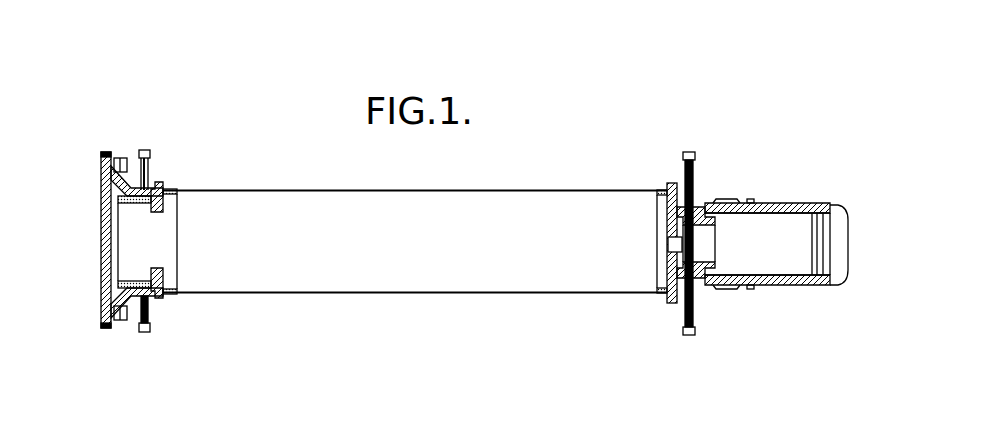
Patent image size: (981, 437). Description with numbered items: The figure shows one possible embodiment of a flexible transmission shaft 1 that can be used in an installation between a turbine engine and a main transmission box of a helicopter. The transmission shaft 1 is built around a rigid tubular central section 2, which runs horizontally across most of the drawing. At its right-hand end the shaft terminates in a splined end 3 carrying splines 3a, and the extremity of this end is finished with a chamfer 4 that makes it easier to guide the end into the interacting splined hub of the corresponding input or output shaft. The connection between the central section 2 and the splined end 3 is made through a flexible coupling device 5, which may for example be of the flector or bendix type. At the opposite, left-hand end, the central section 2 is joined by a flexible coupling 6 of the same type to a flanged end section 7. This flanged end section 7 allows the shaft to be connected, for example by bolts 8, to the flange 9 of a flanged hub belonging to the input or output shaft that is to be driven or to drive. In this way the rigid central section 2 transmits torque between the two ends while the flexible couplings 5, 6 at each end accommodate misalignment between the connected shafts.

The transmission shaft 1 is at (462, 300).
The rigid tubular central section 2 is at (272, 210).
The splined end 3 is at (756, 234).
The splines 3a is at (787, 290).
The chamfer 4 is at (838, 286).
The flexible coupling device 5 is at (694, 167).
The flexible coupling 6 is at (151, 157).
The flanged end section 7 is at (122, 298).
The bolts 8 is at (123, 158).
The flange 9 is at (104, 172).